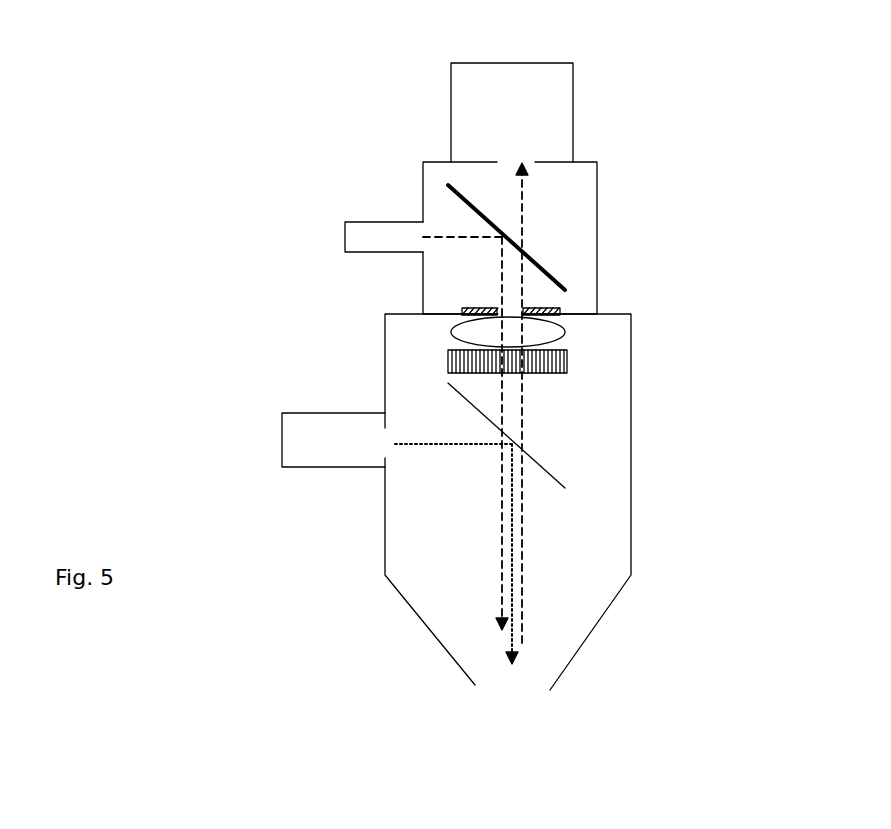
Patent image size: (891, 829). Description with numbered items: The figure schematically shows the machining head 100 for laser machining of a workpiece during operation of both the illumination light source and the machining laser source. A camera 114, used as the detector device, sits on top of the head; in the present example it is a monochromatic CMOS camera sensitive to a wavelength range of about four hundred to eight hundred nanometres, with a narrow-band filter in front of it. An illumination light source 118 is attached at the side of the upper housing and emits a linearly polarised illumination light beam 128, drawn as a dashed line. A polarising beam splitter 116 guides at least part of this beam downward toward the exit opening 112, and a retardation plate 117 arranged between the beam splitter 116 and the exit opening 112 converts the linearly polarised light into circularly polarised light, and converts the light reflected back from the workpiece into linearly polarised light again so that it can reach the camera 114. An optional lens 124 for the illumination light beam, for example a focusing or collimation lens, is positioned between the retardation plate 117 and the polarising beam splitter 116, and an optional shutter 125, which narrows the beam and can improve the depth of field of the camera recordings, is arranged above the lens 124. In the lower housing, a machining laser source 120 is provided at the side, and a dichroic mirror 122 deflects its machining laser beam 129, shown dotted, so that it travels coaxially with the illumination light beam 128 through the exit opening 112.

The machining head 100 is at (735, 130).
The exit opening 112 is at (517, 691).
The camera 114 is at (451, 107).
The polarising beam splitter 116 is at (535, 260).
The retardation plate 117 is at (568, 360).
The illumination light source 118 is at (345, 232).
The machining laser source 120 is at (282, 440).
The dichroic mirror 122 is at (562, 484).
The lens 124 is at (567, 333).
The shutter 125 is at (461, 308).
The illumination light beam 128 is at (453, 232).
The machining laser beam 129 is at (435, 444).